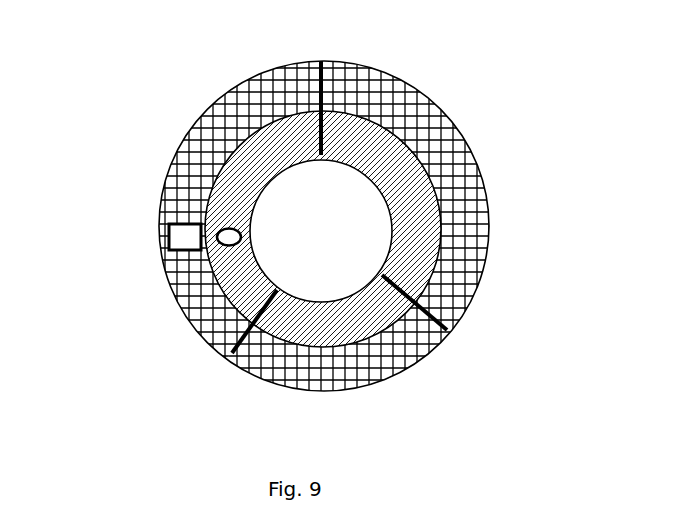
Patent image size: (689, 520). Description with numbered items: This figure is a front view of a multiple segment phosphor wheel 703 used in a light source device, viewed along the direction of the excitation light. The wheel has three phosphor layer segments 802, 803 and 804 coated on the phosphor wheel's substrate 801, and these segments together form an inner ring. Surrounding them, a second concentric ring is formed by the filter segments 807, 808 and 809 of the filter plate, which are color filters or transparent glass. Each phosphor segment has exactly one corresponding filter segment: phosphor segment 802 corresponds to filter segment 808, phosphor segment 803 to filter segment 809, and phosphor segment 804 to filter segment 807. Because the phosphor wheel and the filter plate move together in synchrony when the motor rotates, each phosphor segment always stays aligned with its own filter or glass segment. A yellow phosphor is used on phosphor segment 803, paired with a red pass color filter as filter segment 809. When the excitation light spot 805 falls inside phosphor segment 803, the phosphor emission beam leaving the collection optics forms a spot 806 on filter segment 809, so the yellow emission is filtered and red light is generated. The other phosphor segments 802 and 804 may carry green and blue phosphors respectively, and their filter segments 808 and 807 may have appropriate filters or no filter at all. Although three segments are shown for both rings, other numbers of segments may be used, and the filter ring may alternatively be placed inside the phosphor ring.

The phosphor wheel 703 is at (92, 118).
The substrate 801 is at (330, 255).
The phosphor segment 802 is at (313, 325).
The phosphor segment 803 is at (239, 170).
The phosphor segment 804 is at (418, 182).
The excitation light spot 805 is at (219, 252).
The spot 806 is at (169, 241).
The filter segment 807 is at (470, 225).
The filter segment 808 is at (337, 370).
The filter segment 809 is at (227, 113).